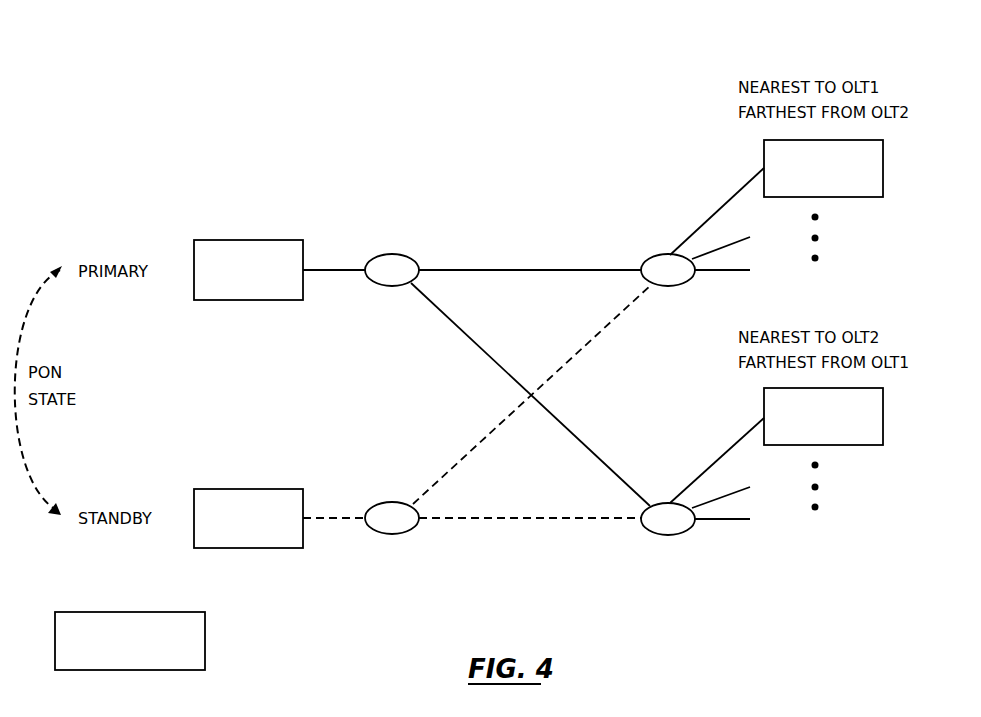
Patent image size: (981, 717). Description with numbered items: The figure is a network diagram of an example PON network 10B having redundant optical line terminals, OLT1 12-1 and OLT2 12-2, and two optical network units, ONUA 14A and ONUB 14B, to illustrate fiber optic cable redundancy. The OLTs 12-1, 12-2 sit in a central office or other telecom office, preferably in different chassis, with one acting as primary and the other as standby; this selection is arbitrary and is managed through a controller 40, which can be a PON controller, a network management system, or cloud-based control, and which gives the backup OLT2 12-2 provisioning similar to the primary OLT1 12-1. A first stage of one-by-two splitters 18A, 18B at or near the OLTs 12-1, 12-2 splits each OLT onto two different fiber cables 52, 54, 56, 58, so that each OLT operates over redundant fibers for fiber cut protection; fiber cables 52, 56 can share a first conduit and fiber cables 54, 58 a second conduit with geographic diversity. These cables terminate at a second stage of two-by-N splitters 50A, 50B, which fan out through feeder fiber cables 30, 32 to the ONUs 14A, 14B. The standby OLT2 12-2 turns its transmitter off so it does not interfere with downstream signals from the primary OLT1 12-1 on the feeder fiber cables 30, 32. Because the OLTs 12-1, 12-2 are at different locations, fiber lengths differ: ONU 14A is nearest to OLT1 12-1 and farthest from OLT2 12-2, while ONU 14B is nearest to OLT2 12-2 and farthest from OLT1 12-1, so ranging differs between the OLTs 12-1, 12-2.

The PON network 10B is at (510, 66).
The OLT1 12-1 is at (231, 295).
The OLT2 12-2 is at (231, 541).
The ONUA 14A is at (809, 189).
The ONUB 14B is at (809, 438).
The first stage splitter 18A is at (378, 286).
The first stage splitter 18B is at (378, 534).
The feeder fiber cable 30 is at (720, 207).
The feeder fiber cable 32 is at (712, 460).
The controller 40 is at (120, 664).
The second stage splitter 50A is at (652, 255).
The second stage splitter 50B is at (646, 531).
The fiber cable 52 is at (535, 268).
The fiber cable 54 is at (447, 318).
The fiber cable 56 is at (568, 360).
The fiber cable 58 is at (550, 518).